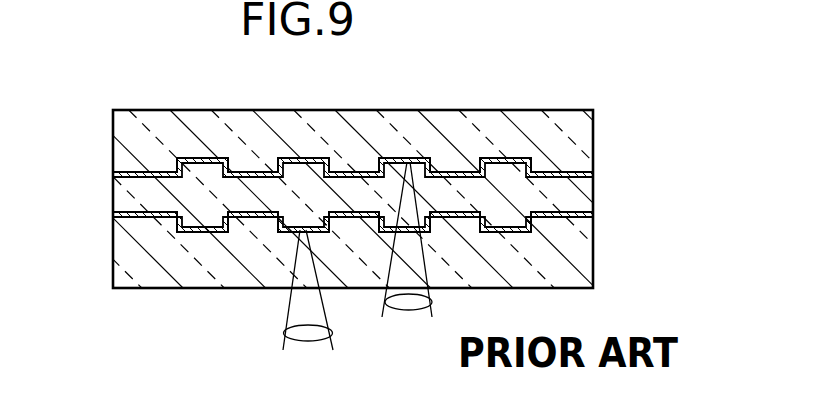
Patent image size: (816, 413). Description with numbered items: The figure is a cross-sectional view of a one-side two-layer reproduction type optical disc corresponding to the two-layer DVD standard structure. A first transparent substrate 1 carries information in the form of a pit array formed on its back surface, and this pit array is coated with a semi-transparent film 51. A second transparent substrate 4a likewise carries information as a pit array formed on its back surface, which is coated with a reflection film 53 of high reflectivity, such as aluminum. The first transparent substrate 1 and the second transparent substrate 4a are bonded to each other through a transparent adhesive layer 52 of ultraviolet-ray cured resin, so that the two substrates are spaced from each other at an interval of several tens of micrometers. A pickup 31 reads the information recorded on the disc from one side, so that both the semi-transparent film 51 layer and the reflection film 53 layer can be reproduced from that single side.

The first transparent substrate 1 is at (147, 280).
The second transparent substrate 4a is at (157, 122).
The pickup 31 is at (283, 348).
The semi-transparent film 51 is at (118, 220).
The transparent adhesive layer 52 is at (120, 205).
The reflection film 53 is at (113, 171).